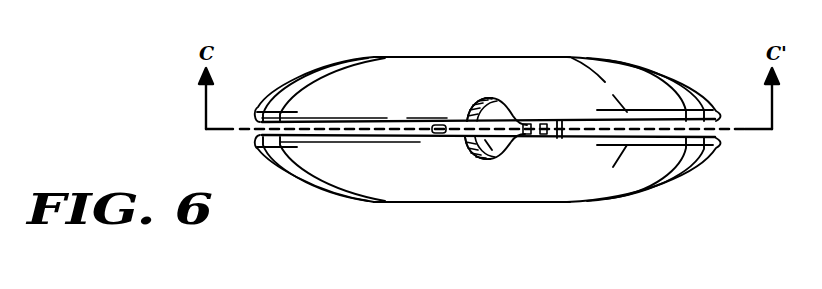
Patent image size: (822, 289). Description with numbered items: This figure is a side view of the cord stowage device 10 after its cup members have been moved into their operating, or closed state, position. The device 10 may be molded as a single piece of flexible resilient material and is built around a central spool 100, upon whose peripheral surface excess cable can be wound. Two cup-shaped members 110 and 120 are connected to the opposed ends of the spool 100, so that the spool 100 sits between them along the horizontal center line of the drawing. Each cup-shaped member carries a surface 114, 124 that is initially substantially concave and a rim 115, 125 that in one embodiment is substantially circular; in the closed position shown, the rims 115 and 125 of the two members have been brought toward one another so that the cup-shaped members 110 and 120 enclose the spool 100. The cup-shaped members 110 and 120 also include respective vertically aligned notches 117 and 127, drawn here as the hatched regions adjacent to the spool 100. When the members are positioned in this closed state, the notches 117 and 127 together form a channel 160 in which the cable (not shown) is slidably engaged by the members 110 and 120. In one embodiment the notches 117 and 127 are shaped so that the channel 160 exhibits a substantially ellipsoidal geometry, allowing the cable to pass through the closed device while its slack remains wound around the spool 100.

The cord stowage device 10 is at (138, 166).
The spool 100 is at (537, 133).
The cup-shaped member 110 is at (635, 81).
The surface 114 is at (537, 76).
The rim 115 is at (259, 108).
The notch 117 is at (470, 100).
The cup-shaped member 120 is at (643, 177).
The surface 124 is at (582, 190).
The rim 125 is at (258, 147).
The notch 127 is at (462, 150).
The channel 160 is at (494, 153).